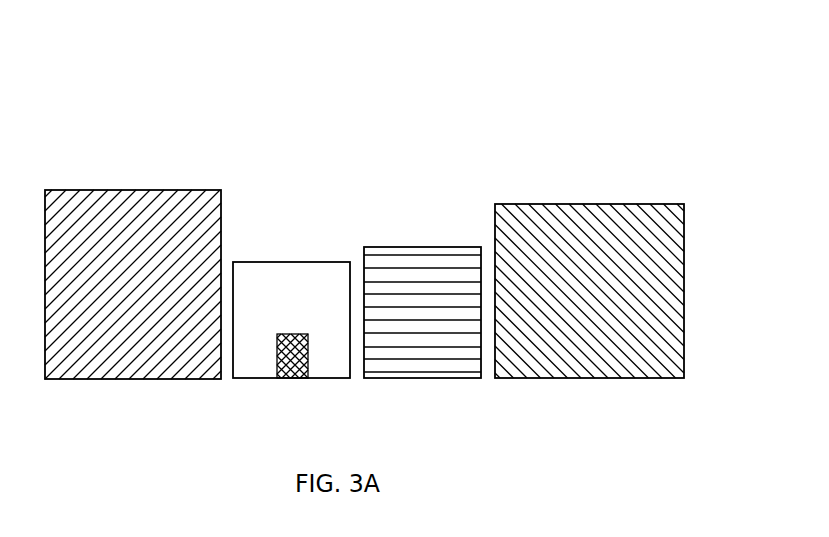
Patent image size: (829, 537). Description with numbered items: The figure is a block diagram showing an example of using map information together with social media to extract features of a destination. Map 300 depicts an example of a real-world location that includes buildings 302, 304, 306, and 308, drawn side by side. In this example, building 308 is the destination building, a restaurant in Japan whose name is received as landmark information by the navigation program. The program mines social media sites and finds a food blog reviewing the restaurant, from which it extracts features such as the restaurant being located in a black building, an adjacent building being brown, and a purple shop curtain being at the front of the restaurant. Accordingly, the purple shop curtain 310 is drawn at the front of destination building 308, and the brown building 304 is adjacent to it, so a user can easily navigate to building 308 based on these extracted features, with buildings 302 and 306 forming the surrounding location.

The map 300 is at (692, 98).
The building 302 is at (83, 190).
The building 304 is at (376, 247).
The building 306 is at (547, 204).
The destination building 308 is at (245, 262).
The purple shop curtain 310 is at (291, 379).